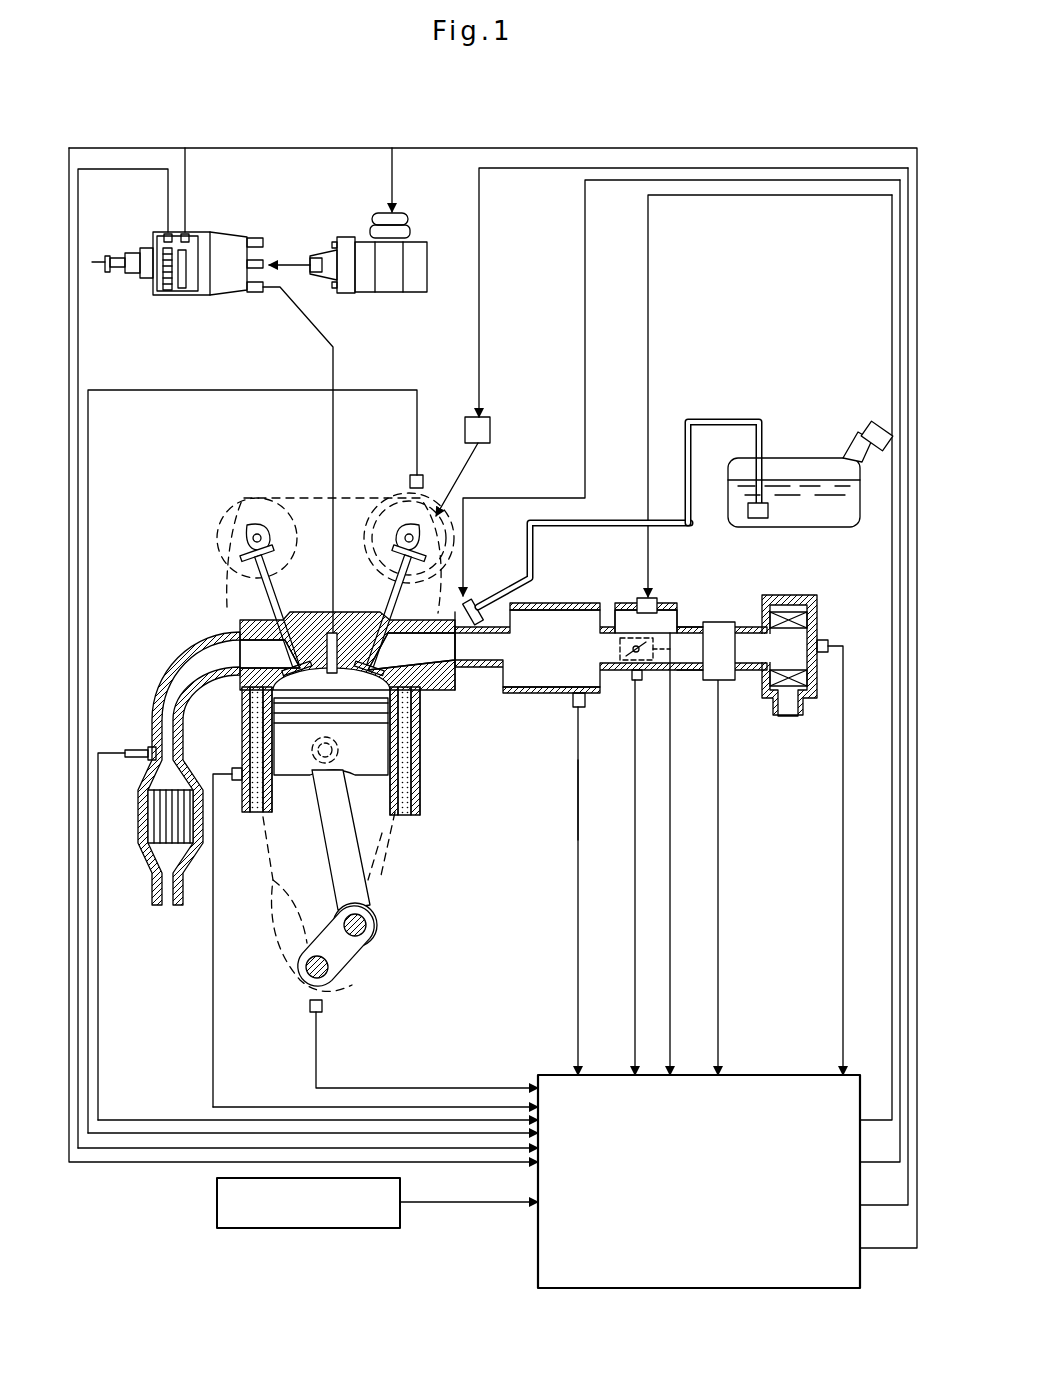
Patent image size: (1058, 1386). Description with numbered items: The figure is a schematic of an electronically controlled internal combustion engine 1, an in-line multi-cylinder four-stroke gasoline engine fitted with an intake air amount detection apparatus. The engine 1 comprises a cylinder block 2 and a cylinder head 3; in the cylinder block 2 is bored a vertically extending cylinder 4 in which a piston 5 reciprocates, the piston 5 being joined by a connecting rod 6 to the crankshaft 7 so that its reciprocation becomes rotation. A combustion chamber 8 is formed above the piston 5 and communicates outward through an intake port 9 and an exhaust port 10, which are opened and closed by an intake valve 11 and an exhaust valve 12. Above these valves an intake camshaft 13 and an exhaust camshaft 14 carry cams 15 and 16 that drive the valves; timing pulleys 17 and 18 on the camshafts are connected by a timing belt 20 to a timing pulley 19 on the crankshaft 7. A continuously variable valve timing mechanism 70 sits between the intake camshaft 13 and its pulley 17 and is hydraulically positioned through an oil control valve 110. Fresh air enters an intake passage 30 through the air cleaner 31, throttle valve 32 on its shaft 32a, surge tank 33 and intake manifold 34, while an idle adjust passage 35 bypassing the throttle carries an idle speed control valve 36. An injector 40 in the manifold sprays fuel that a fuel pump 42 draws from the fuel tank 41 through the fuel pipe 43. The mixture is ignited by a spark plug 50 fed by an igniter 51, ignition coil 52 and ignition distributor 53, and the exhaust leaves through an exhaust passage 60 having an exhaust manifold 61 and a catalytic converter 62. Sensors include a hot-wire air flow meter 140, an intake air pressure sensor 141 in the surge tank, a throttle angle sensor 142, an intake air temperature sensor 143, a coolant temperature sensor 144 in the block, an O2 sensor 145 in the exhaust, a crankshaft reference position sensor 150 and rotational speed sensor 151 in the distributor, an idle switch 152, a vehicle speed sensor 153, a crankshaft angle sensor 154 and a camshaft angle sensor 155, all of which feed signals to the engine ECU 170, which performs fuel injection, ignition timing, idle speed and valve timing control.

The internal combustion engine 1 is at (432, 770).
The cylinder block 2 is at (420, 795).
The cylinder head 3 is at (240, 622).
The cylinder 4 is at (395, 825).
The piston 5 is at (390, 740).
The connecting rod 6 is at (380, 925).
The crankshaft 7 is at (335, 978).
The combustion chamber 8 is at (315, 765).
The intake port 9 is at (420, 690).
The exhaust port 10 is at (242, 688).
The intake valve 11 is at (410, 645).
The exhaust valve 12 is at (283, 655).
The intake camshaft 13 is at (392, 570).
The exhaust camshaft 14 is at (250, 537).
The intake cam 15 is at (400, 538).
The exhaust cam 16 is at (255, 520).
The intake camshaft timing pulley 17 is at (380, 515).
The exhaust camshaft timing pulley 18 is at (286, 498).
The crankshaft timing pulley 19 is at (278, 890).
The timing belt 20 is at (290, 928).
The intake passage 30 is at (636, 682).
The air cleaner 31 is at (780, 596).
The throttle valve 32 is at (620, 655).
The throttle shaft 32a is at (620, 645).
The surge tank 33 is at (528, 694).
The intake manifold 34 is at (480, 668).
The idle adjust passage 35 is at (657, 600).
The idle speed control valve 36 is at (630, 603).
The injector 40 is at (476, 600).
The fuel tank 41 is at (808, 527).
The fuel pump 42 is at (748, 515).
The fuel pipe 43 is at (730, 418).
The spark plug 50 is at (328, 630).
The igniter 51 is at (410, 224).
The ignition coil 52 is at (383, 232).
The ignition distributor 53 is at (182, 224).
The exhaust passage 60 is at (166, 760).
The exhaust manifold 61 is at (170, 636).
The catalytic converter 62 is at (145, 830).
The continuously variable valve timing mechanism 70 is at (436, 505).
The oil control valve 110 is at (490, 430).
The hot-wire air flow meter 140 is at (715, 682).
The intake air pressure sensor 141 is at (578, 710).
The throttle angle sensor 142 is at (684, 633).
The intake air temperature sensor 143 is at (826, 640).
The coolant temperature sensor 144 is at (236, 782).
The O2 sensor 145 is at (138, 750).
The crankshaft reference position sensor 150 is at (190, 232).
The rotational speed sensor 151 is at (168, 232).
The idle switch 152 is at (578, 795).
The vehicle speed sensor 153 is at (217, 1200).
The crankshaft angle sensor 154 is at (322, 1010).
The camshaft angle sensor 155 is at (412, 475).
The engine electronic control unit 170 is at (778, 1073).